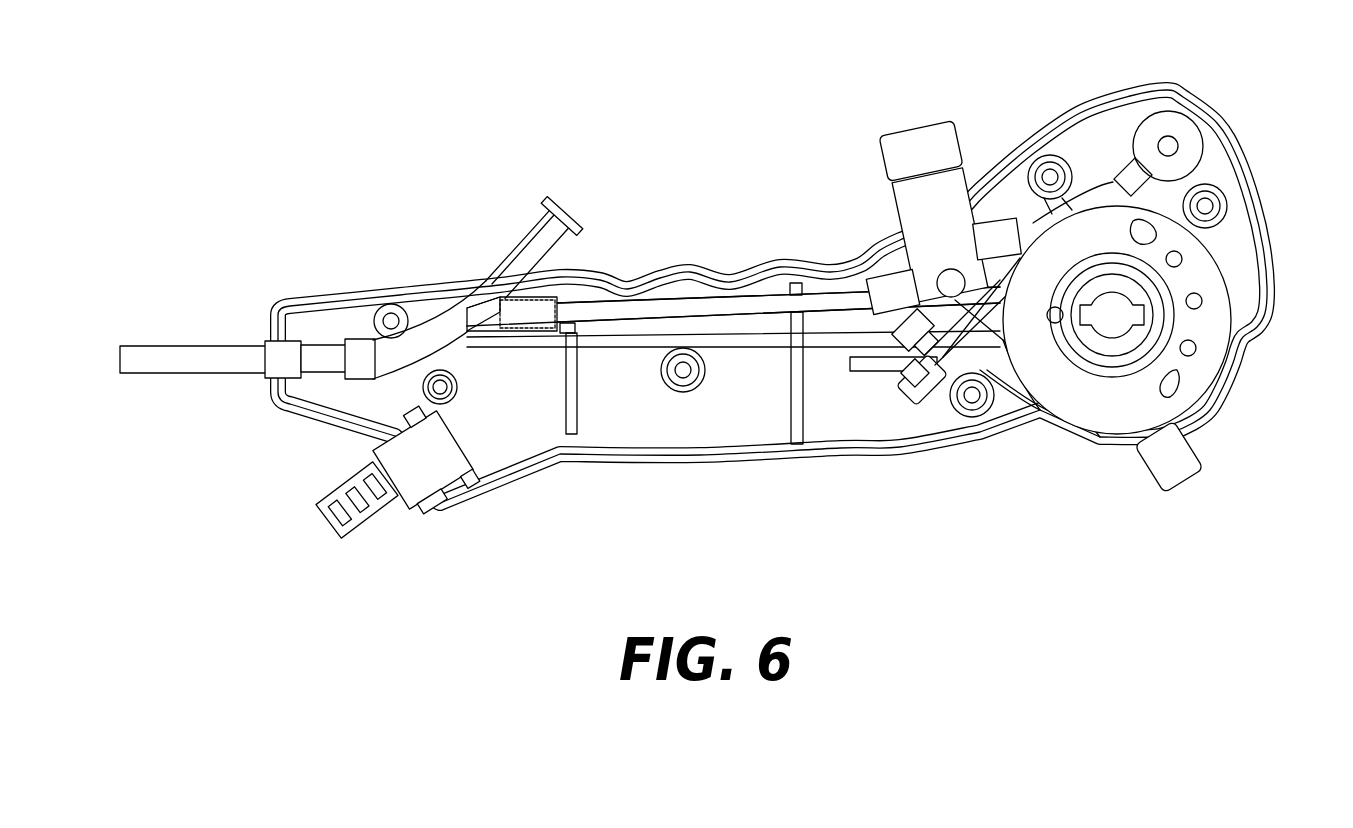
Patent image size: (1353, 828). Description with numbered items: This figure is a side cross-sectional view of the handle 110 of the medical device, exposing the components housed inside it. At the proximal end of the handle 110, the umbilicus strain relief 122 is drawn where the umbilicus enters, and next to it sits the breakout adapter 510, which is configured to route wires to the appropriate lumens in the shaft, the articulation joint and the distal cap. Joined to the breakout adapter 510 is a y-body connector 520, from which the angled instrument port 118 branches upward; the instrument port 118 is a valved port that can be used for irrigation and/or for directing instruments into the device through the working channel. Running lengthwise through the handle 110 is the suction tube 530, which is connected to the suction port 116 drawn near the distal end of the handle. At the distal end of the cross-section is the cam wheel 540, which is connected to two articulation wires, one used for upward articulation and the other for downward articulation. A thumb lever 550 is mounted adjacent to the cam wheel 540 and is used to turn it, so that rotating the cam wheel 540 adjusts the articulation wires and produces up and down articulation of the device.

The handle 110 is at (292, 168).
The suction port 116 is at (922, 120).
The instrument port 118 is at (582, 210).
The umbilicus strain relief 122 is at (347, 532).
The breakout adapter 510 is at (268, 338).
The y-body connector 520 is at (430, 330).
The suction tube 530 is at (686, 312).
The cam wheel 540 is at (1168, 357).
The thumb lever 550 is at (1192, 482).